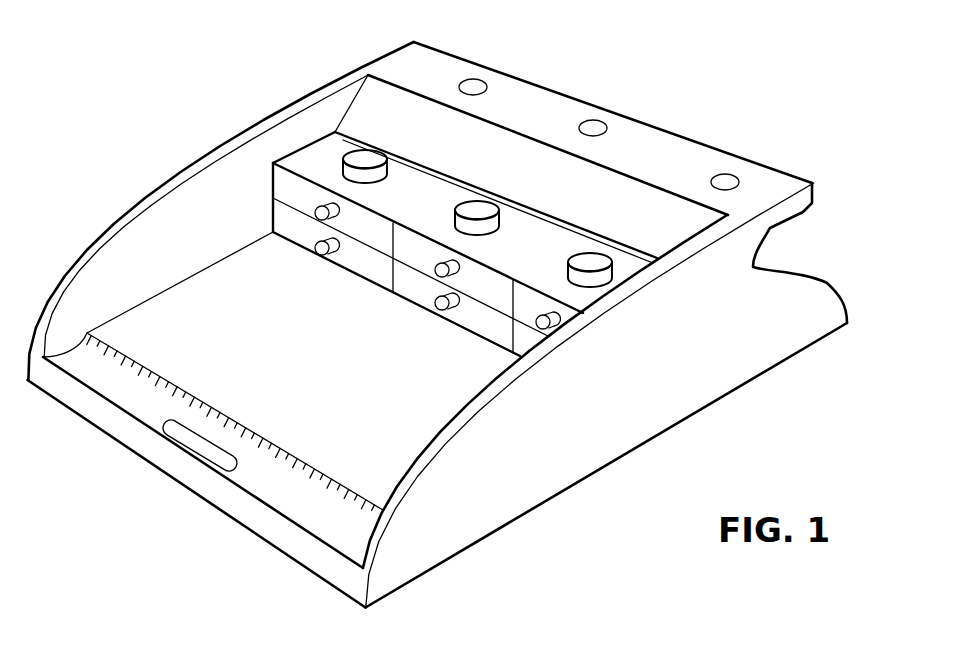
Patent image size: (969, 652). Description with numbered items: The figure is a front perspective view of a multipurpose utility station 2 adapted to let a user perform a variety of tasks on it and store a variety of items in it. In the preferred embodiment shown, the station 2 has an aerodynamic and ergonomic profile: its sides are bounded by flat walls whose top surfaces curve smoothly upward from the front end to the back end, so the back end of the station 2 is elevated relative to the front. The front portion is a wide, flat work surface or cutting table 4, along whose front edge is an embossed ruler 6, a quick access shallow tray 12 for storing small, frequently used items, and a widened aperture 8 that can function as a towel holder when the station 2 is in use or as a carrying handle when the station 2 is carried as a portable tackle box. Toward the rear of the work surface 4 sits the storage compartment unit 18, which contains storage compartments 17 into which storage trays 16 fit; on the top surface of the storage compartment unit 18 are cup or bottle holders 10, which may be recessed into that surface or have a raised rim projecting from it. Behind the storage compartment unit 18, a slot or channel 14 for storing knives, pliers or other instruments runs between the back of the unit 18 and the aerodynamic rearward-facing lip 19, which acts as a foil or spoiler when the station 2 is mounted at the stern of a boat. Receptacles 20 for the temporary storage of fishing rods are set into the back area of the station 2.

The multipurpose utility station 2 is at (633, 478).
The work surface 4 is at (170, 315).
The embossed ruler 6 is at (383, 510).
The widened aperture 8 is at (197, 443).
The cup or bottle holders 10 is at (375, 158).
The quick access shallow tray 12 is at (277, 491).
The slot or channel 14 is at (463, 175).
The storage trays 16 is at (267, 173).
The storage compartments 17 is at (267, 187).
The storage compartment unit 18 is at (302, 157).
The aerodynamic lip 19 is at (812, 190).
The receptacles 20 is at (598, 119).